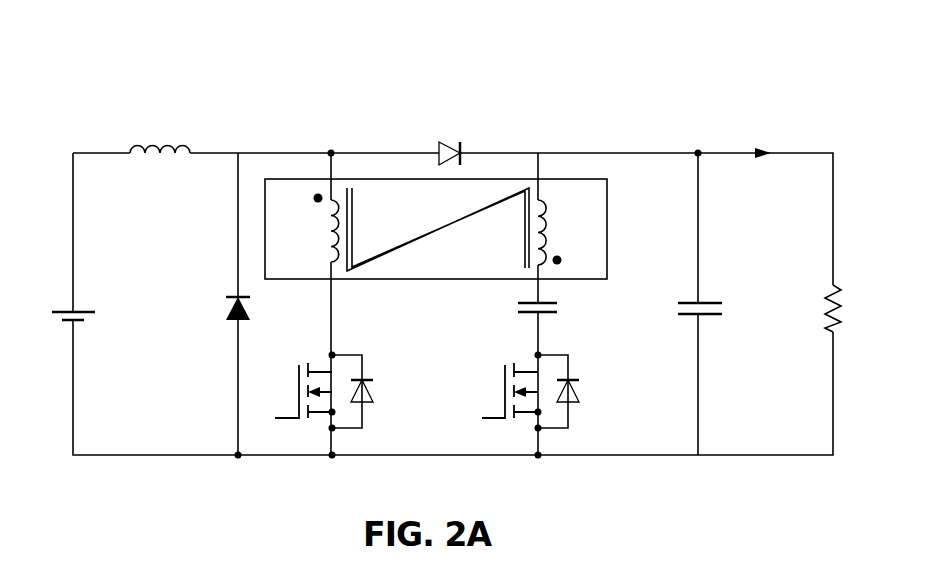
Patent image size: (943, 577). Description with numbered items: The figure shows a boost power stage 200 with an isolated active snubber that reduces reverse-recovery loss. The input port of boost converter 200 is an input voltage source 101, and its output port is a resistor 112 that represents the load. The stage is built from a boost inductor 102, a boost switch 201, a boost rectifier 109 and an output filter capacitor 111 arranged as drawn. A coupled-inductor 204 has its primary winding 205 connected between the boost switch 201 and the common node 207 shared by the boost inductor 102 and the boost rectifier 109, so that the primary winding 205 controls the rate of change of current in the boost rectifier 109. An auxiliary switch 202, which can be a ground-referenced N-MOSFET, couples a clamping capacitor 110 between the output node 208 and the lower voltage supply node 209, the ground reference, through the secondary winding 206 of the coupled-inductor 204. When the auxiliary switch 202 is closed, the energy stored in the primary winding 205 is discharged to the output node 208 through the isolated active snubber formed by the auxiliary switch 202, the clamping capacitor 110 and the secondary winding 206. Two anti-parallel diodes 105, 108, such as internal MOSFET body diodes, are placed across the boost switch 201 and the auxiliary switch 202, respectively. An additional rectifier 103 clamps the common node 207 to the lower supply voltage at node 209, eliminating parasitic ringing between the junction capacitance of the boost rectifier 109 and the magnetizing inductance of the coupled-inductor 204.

The boost converter 200 is at (619, 75).
The input voltage source 101 is at (88, 305).
The boost inductor 102 is at (182, 146).
The additional rectifier 103 is at (234, 322).
The anti-parallel diode 105 is at (376, 391).
The anti-parallel diode 108 is at (582, 392).
The boost rectifier 109 is at (462, 150).
The clamping capacitor 110 is at (558, 302).
The output filter capacitor 111 is at (705, 302).
The resistor 112 is at (836, 283).
The boost switch 201 is at (299, 368).
The auxiliary switch 202 is at (487, 418).
The coupled-inductor 204 is at (413, 280).
The primary winding 205 is at (331, 231).
The secondary winding 206 is at (546, 224).
The common node 207 is at (331, 152).
The output node 208 is at (698, 152).
The lower voltage supply node 209 is at (238, 458).